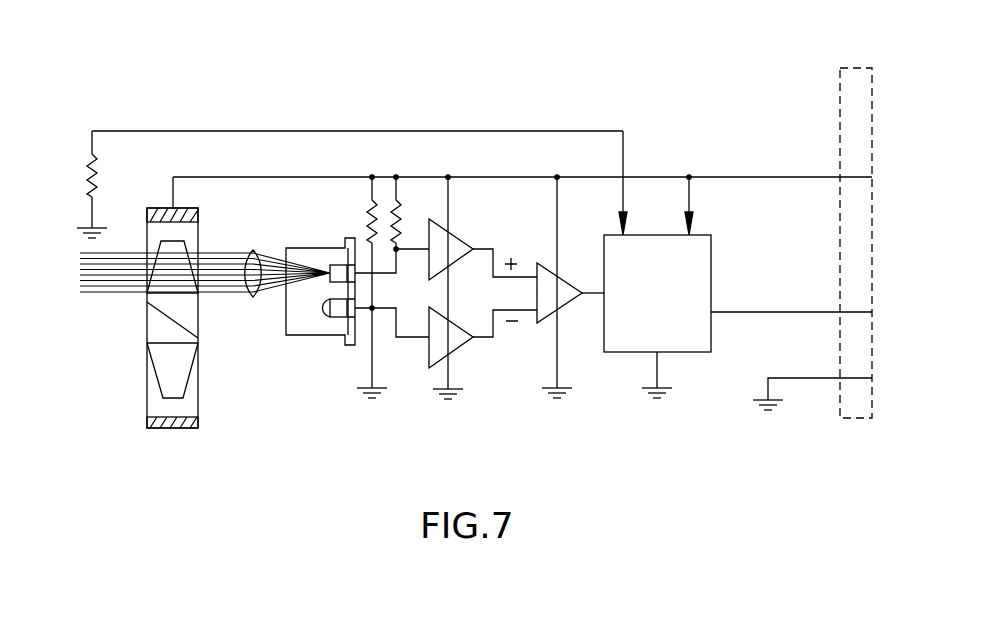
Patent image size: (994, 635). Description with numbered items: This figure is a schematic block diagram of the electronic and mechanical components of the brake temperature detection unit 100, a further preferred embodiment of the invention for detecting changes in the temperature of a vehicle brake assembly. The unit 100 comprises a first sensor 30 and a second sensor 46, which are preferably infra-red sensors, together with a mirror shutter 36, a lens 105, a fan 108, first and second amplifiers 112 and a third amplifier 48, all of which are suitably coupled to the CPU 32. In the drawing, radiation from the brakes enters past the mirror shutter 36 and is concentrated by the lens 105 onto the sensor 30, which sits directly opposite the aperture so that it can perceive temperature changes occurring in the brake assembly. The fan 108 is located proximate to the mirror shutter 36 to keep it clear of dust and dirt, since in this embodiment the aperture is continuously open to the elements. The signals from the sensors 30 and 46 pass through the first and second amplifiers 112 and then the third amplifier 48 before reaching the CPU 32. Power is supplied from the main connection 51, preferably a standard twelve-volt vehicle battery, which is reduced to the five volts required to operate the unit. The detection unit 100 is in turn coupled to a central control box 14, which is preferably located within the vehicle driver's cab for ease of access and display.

The central control box 14 is at (93, 172).
The lens 105 is at (247, 248).
The first sensor 30 is at (334, 265).
The brake temperature detection unit 100 is at (495, 92).
The CPU 32 is at (668, 235).
The main connection 51 is at (862, 77).
The mirror shutter 36 is at (160, 312).
The fan 108 is at (167, 430).
The second sensor 46 is at (333, 318).
The first and second amplifiers 112 is at (450, 262).
The third amplifier 48 is at (562, 308).